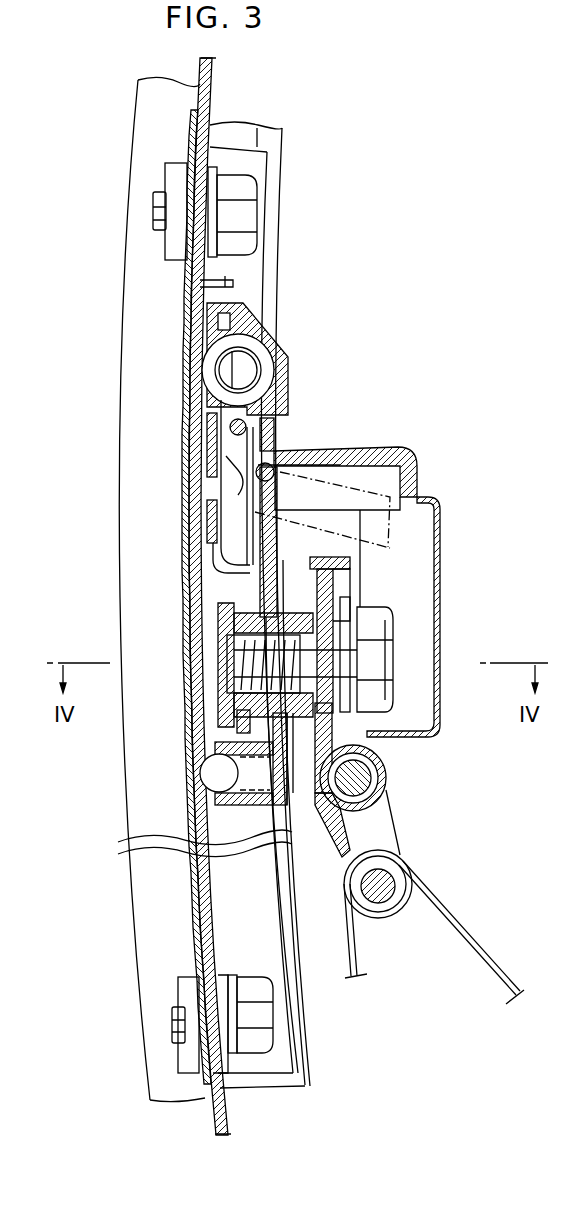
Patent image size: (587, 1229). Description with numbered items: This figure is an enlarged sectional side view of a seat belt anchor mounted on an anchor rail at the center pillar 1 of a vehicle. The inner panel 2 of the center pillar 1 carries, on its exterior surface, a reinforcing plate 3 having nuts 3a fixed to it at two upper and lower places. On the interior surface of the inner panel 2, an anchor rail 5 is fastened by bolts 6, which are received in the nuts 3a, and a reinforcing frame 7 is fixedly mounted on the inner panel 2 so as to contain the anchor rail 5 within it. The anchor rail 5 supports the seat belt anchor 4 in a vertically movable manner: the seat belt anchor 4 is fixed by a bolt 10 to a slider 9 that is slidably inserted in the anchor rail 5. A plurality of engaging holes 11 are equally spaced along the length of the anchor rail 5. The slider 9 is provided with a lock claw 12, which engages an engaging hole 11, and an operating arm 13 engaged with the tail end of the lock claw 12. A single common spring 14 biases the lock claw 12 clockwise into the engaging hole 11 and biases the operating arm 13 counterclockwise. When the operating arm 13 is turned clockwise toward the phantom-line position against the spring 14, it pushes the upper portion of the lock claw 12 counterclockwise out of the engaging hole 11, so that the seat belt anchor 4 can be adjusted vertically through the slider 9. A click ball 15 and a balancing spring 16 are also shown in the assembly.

The center pillar 1 is at (218, 77).
The inner panel 2 is at (212, 100).
The reinforcing plate 3 is at (143, 802).
The nut 3a is at (170, 250).
The seat belt anchor 4 is at (385, 783).
The anchor rail 5 is at (262, 284).
The bolt 6 is at (247, 210).
The reinforcing frame 7 is at (276, 143).
The slider 9 is at (228, 612).
The bolt 10 is at (372, 668).
The engaging hole 11 is at (195, 553).
The lock claw 12 is at (192, 567).
The operating arm 13 is at (357, 460).
The spring 14 is at (281, 453).
The click ball 15 is at (217, 776).
The balancing spring 16 is at (268, 372).